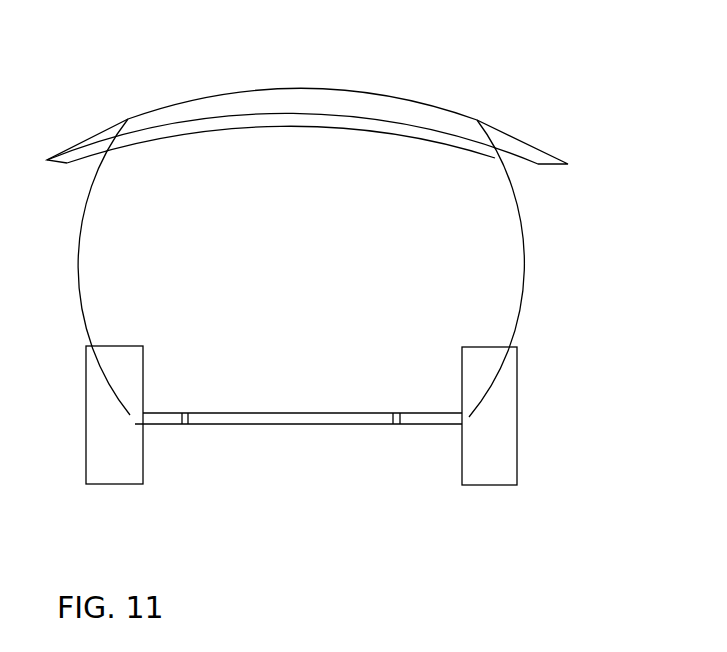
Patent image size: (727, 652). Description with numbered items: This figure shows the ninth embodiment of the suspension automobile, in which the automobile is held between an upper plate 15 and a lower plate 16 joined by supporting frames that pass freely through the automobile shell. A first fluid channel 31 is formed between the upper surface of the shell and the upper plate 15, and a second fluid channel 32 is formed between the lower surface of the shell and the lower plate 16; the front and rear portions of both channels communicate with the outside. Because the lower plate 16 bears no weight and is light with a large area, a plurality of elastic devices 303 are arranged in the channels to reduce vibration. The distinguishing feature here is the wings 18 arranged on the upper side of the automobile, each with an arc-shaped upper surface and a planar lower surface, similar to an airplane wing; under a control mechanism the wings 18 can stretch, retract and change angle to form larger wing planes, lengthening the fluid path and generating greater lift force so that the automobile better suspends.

The upper plate 15 is at (67, 46).
The first fluid channel 31 is at (498, 54).
The wing 18 is at (530, 130).
The elastic device 303 is at (298, 435).
The second fluid channel 32 is at (175, 459).
The lower plate 16 is at (393, 427).